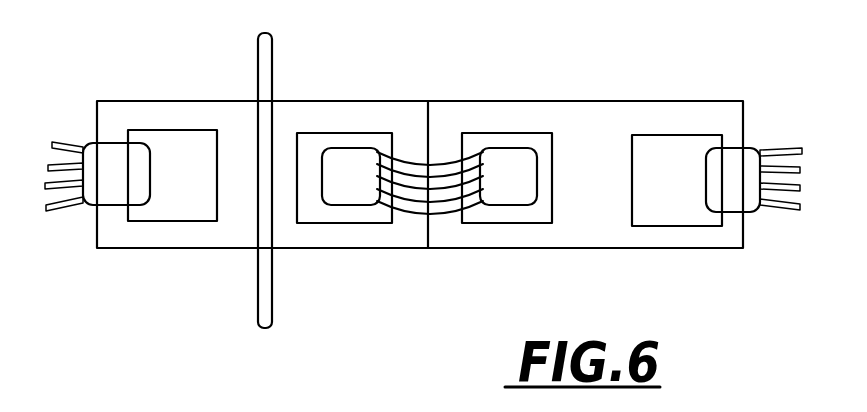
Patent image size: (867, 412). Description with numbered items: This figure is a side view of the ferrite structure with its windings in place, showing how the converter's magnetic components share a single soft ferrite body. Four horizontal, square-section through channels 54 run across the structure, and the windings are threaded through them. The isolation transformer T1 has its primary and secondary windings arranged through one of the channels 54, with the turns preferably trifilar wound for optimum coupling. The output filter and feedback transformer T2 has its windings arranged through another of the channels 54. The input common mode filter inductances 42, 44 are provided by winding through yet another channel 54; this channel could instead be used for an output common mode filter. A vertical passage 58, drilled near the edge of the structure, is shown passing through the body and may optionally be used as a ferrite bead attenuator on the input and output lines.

The input common mode filter inductance 44 is at (106, 130).
The input common mode filter inductance 42 is at (112, 156).
The vertical passage 58 is at (262, 70).
The through channel 54 is at (170, 207).
The isolation transformer T1 is at (438, 165).
The output filter and feedback transformer T2 is at (729, 167).